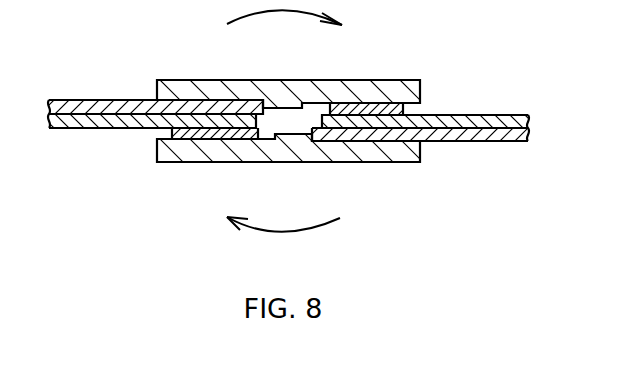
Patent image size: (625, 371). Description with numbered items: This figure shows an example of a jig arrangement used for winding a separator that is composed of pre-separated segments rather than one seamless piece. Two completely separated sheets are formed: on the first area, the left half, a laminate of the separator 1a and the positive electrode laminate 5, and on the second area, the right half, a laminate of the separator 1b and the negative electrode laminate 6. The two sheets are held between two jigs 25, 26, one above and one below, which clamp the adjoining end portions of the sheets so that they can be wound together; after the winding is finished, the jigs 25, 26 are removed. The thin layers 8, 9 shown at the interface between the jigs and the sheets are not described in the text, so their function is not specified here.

The separator 1a is at (86, 112).
The separator 1b is at (481, 133).
The positive electrode laminate 5 is at (79, 124).
The negative electrode laminate 6 is at (500, 121).
The lower adhesive strip 8 is at (188, 136).
The upper adhesive strip 9 is at (392, 108).
The jig 25 is at (177, 88).
The jig 26 is at (402, 153).